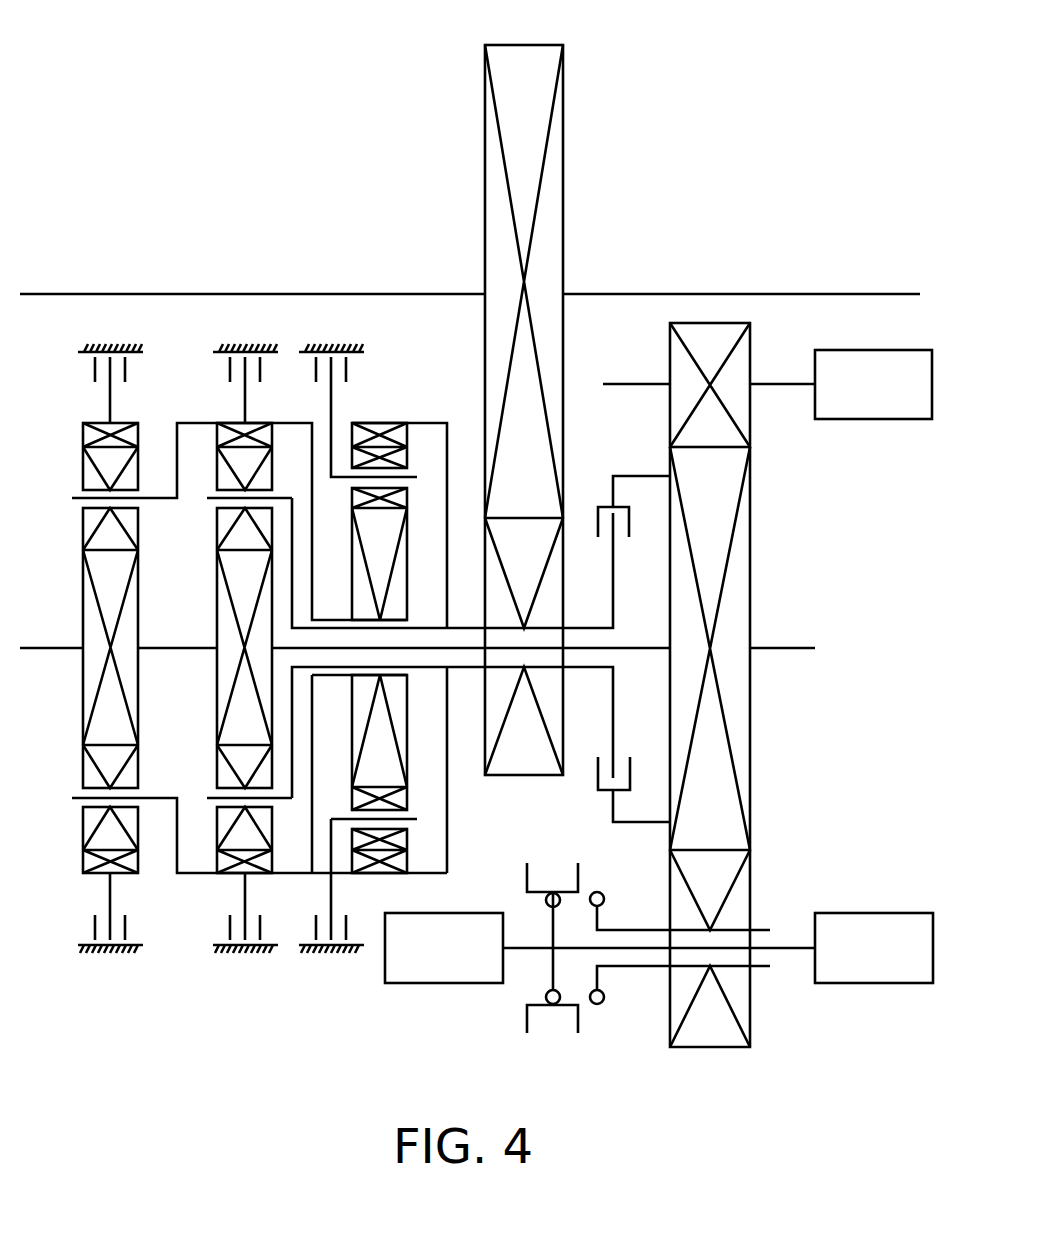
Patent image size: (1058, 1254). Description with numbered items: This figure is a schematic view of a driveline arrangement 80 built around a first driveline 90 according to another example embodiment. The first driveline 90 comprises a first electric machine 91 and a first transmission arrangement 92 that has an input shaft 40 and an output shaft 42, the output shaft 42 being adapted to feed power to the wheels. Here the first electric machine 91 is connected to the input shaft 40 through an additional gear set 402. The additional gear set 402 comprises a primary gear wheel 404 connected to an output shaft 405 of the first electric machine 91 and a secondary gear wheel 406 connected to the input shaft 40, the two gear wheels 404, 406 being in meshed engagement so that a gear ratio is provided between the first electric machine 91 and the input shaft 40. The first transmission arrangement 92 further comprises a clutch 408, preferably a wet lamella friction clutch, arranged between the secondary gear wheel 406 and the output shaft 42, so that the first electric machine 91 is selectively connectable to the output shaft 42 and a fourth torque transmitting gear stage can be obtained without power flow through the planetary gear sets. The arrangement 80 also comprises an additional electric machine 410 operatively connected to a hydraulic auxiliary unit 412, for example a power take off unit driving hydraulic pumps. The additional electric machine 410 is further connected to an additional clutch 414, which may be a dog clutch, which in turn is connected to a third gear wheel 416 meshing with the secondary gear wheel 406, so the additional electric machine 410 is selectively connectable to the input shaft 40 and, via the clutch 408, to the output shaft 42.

The driveline arrangement 80 is at (119, 87).
The first driveline 90 is at (242, 173).
The first transmission arrangement 92 is at (363, 247).
The primary gear wheel 404 is at (750, 350).
The output shaft of the first electric machine 405 is at (783, 384).
The clutch 408 is at (620, 507).
The first electric machine 91 is at (877, 419).
The output shaft 42 is at (585, 628).
The input shaft 40 is at (632, 648).
The secondary gear wheel 406 is at (750, 718).
The additional gear set 402 is at (786, 767).
The hydraulic auxiliary unit 412 is at (438, 983).
The additional clutch 414 is at (568, 1045).
The third gear wheel 416 is at (713, 1047).
The additional electric machine 410 is at (872, 983).